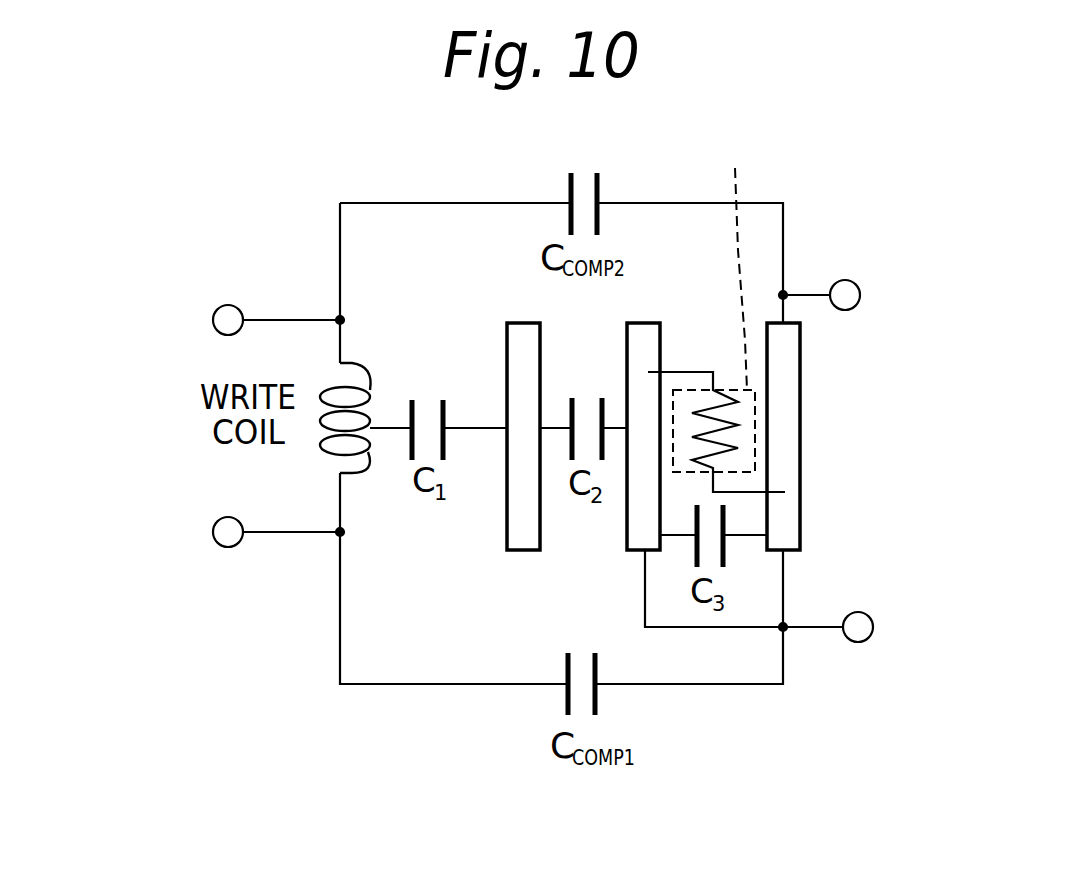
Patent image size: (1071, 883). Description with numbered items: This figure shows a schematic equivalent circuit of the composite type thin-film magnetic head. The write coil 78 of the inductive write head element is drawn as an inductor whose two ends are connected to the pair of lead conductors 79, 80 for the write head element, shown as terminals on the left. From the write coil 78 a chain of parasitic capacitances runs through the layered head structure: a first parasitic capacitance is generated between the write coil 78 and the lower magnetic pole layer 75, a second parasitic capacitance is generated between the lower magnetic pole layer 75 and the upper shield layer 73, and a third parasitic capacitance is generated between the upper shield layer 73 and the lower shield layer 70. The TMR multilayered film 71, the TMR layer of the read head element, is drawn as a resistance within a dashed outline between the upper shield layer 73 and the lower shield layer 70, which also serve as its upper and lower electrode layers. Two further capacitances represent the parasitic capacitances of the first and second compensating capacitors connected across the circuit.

The lower shield layer 70 is at (790, 417).
The TMR multilayered film 71 is at (745, 388).
The upper shield layer 73 is at (640, 397).
The lower magnetic pole layer 75 is at (518, 376).
The write coil 78 is at (352, 368).
The lead conductor 79 is at (287, 546).
The lead conductor 80 is at (278, 318).